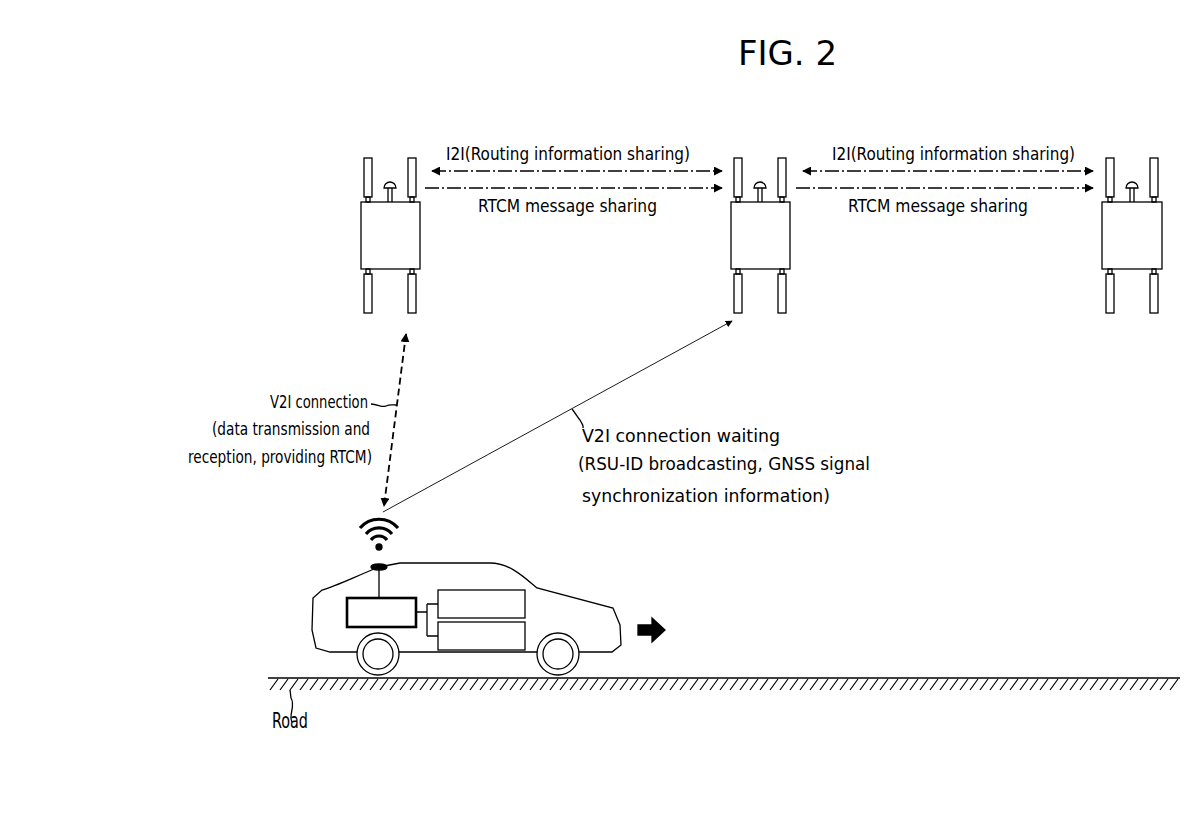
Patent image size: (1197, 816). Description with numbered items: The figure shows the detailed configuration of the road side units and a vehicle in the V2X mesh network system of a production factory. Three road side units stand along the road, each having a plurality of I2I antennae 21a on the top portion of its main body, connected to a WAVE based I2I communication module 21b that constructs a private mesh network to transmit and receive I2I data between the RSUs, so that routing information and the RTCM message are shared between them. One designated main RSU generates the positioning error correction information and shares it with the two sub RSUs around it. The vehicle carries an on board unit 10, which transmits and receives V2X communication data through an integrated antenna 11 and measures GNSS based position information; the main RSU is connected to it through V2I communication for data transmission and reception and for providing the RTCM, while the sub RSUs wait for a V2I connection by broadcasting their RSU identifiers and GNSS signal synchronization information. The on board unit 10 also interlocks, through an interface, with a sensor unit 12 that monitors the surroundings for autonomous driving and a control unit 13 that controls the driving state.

The on board unit 10 is at (347, 610).
The integrated antenna 11 is at (372, 566).
The sensor unit 12 is at (525, 600).
The control unit 13 is at (525, 636).
The I2I antenna 21a is at (412, 157).
The I2I communication module 21b is at (368, 314).